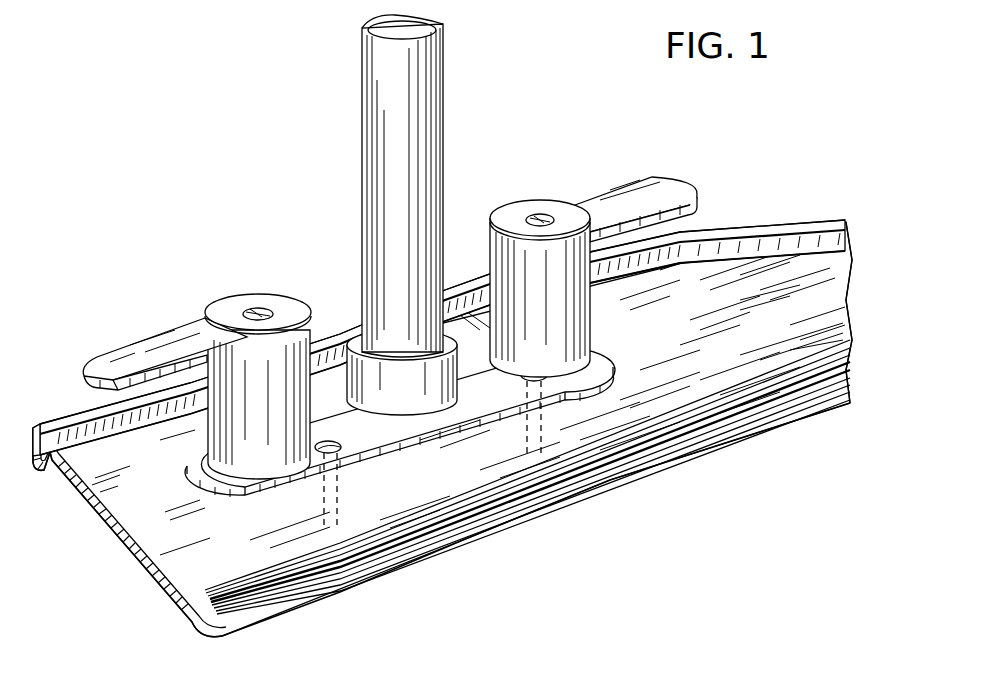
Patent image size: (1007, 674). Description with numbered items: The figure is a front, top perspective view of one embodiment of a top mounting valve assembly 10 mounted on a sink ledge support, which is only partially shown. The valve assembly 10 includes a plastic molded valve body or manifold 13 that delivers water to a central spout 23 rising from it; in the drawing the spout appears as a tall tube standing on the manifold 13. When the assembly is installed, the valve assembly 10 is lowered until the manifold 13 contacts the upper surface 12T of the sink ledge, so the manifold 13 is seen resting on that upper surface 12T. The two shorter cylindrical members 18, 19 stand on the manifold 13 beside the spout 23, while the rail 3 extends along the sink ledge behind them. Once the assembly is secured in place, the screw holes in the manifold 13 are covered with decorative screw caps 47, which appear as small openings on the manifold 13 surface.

The section line for FIG. 3 is at (682, 360).
The top mounting valve assembly 10 is at (598, 314).
The upper surface of the sink ledge 12T is at (192, 572).
The valve body or manifold 13 is at (615, 388).
The first pedestal with arm 18 is at (268, 296).
The second pedestal with arm 19 is at (541, 205).
The central spout 23 is at (376, 183).
The screw caps 47 is at (322, 453).